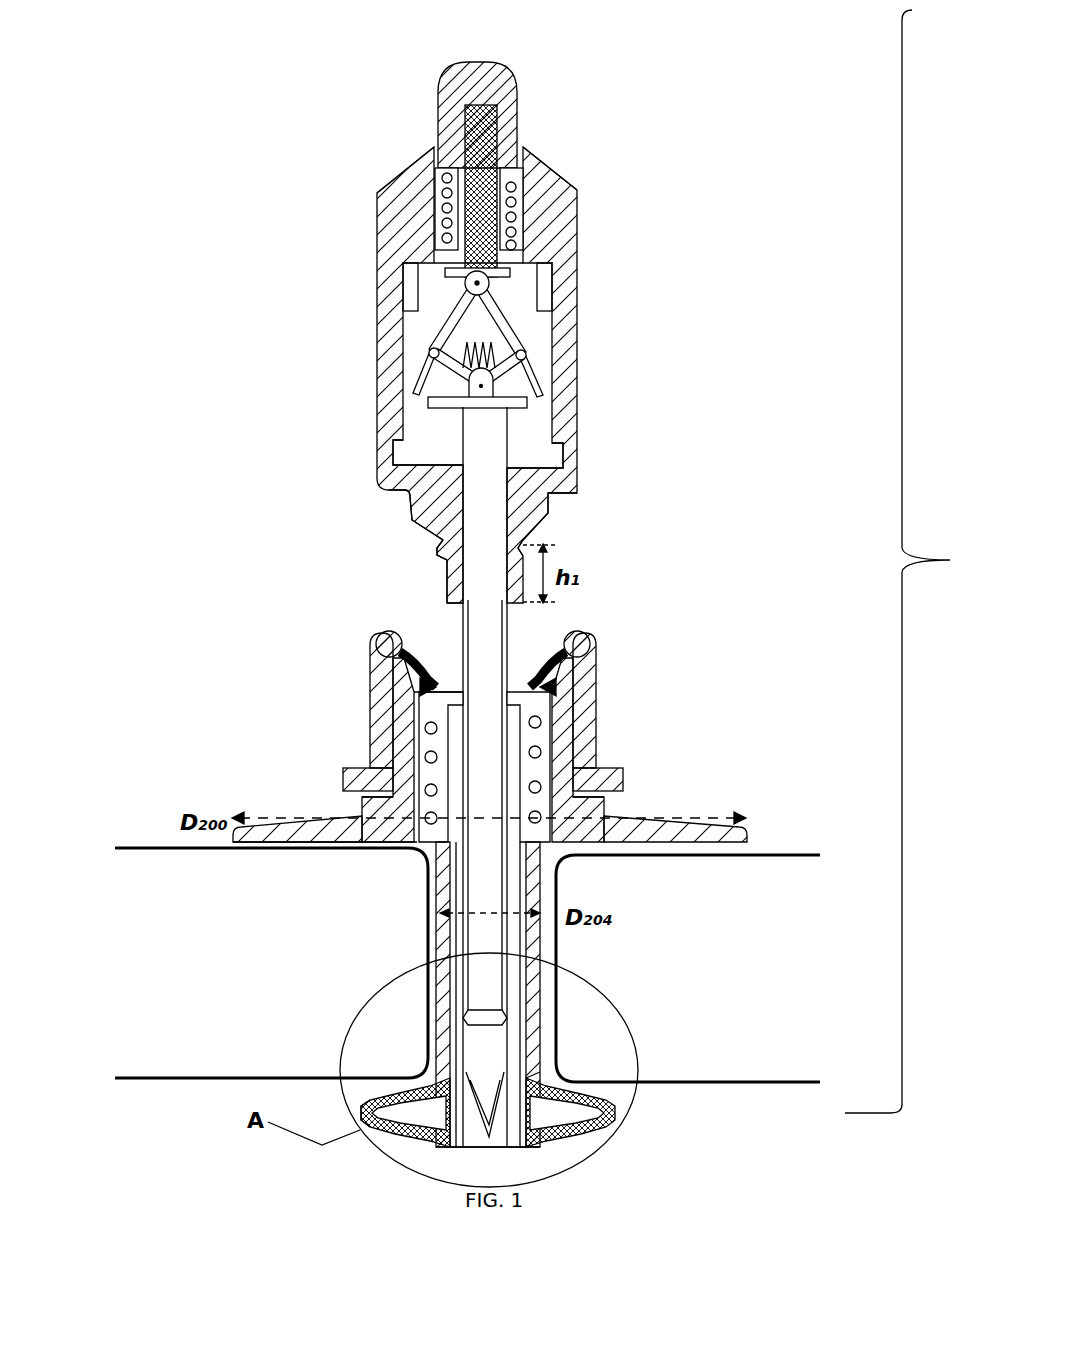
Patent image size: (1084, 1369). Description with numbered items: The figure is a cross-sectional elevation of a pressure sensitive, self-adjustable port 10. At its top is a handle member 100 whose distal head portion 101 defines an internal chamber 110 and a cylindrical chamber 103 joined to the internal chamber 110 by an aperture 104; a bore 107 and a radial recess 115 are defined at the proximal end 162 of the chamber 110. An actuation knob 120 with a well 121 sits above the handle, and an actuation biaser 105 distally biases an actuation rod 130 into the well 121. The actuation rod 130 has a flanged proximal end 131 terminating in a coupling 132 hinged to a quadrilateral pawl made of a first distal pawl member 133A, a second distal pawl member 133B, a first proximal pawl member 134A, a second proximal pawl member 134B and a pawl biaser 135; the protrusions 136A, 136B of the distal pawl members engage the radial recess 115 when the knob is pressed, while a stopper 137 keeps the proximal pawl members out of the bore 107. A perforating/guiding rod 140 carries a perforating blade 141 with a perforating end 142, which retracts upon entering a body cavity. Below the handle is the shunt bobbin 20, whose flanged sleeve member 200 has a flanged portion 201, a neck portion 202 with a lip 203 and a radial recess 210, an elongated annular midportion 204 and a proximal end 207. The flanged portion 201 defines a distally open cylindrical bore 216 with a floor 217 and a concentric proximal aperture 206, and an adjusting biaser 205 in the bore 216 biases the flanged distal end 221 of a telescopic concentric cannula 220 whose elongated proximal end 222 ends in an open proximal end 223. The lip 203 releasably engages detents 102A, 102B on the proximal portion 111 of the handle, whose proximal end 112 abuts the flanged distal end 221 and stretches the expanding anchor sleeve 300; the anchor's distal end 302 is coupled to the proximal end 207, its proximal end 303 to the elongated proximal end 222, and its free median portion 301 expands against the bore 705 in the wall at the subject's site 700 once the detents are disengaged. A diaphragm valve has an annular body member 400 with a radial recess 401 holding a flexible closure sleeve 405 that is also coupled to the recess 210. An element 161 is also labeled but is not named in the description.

The pressure sensitive, self-adjustable port 10 is at (130, 212).
The shunt bobbin 20 is at (642, 786).
The handle member 100 is at (578, 414).
The distal head portion 101 is at (553, 525).
The detent 102A is at (527, 550).
The detent 102B is at (438, 555).
The cylindrical chamber 103 is at (432, 180).
The aperture 104 is at (455, 250).
The actuation biaser 105 is at (530, 172).
The bore 107 is at (410, 511).
The internal chamber 110 is at (403, 303).
The proximal portion 111 is at (433, 578).
The proximal end 112 is at (440, 600).
The radial recess 115 is at (435, 462).
The actuation knob 120 is at (522, 108).
The well 121 is at (438, 133).
The actuation rod 130 is at (527, 197).
The flanged proximal end 131 is at (527, 240).
The coupling 132 is at (490, 284).
The first distal pawl member 133A is at (505, 308).
The second distal pawl member 133B is at (448, 327).
The first proximal pawl member 134A is at (530, 375).
The second proximal pawl member 134B is at (430, 365).
The pawl biaser 135 is at (505, 330).
The protrusion 136A is at (545, 393).
The protrusion 136B is at (425, 398).
The stopper 137 is at (440, 413).
The perforating/guiding rod 140 is at (493, 623).
The perforating blade 141 is at (493, 1057).
The perforating end 142 is at (430, 1085).
The plunger seat 161 is at (445, 264).
The proximal end of chamber 162 is at (578, 446).
The flanged sleeve member 200 is at (362, 812).
The flanged portion 201 is at (655, 813).
The neck portion 202 is at (368, 748).
The lip 203 is at (540, 692).
The elongated annular midportion 204 is at (540, 990).
The adjusting biaser 205 is at (537, 750).
The concentric proximal aperture 206 is at (438, 912).
The proximal end of sleeve member 207 is at (440, 1065).
The radial recess 210 is at (430, 663).
The distally open cylindrical bore 216 is at (372, 770).
The floor 217 is at (292, 843).
The telescopic concentric cannula 220 is at (525, 868).
The flanged distal end 221 is at (440, 692).
The elongated proximal end 222 is at (418, 848).
The open proximal end 223 is at (520, 1150).
The expanding anchor sleeve 300 is at (365, 1112).
The free median portion 301 is at (608, 1116).
The distal end of anchor sleeve 302 is at (545, 1075).
The proximal end of anchor sleeve 303 is at (432, 1143).
The annular body member 400 is at (375, 712).
The distally disposed radial recess 401 is at (590, 652).
The flexible closure sleeve 405 is at (375, 655).
The subject's site 700 is at (740, 992).
The bore 705 is at (560, 942).